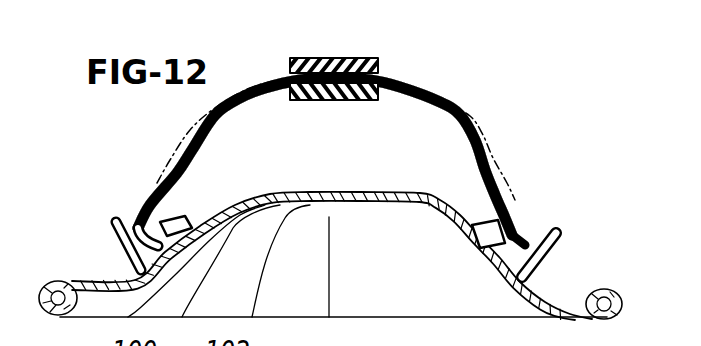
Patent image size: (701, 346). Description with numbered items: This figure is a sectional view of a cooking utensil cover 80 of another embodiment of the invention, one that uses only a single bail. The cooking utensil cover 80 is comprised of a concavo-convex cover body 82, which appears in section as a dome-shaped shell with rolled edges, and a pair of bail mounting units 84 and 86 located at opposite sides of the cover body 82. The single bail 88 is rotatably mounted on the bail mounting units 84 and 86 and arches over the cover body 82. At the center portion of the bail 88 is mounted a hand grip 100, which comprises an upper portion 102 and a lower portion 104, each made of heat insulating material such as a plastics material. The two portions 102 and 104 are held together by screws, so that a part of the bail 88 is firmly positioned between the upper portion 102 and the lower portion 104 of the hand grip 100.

The cooking utensil cover 80 is at (105, 265).
The concavo-convex cover body 82 is at (363, 213).
The bail mounting unit 84 is at (553, 229).
The bail mounting unit 86 is at (110, 226).
The bail 88 is at (453, 133).
The hand grip 100 is at (320, 79).
The upper portion 102 is at (337, 55).
The lower portion 104 is at (332, 102).